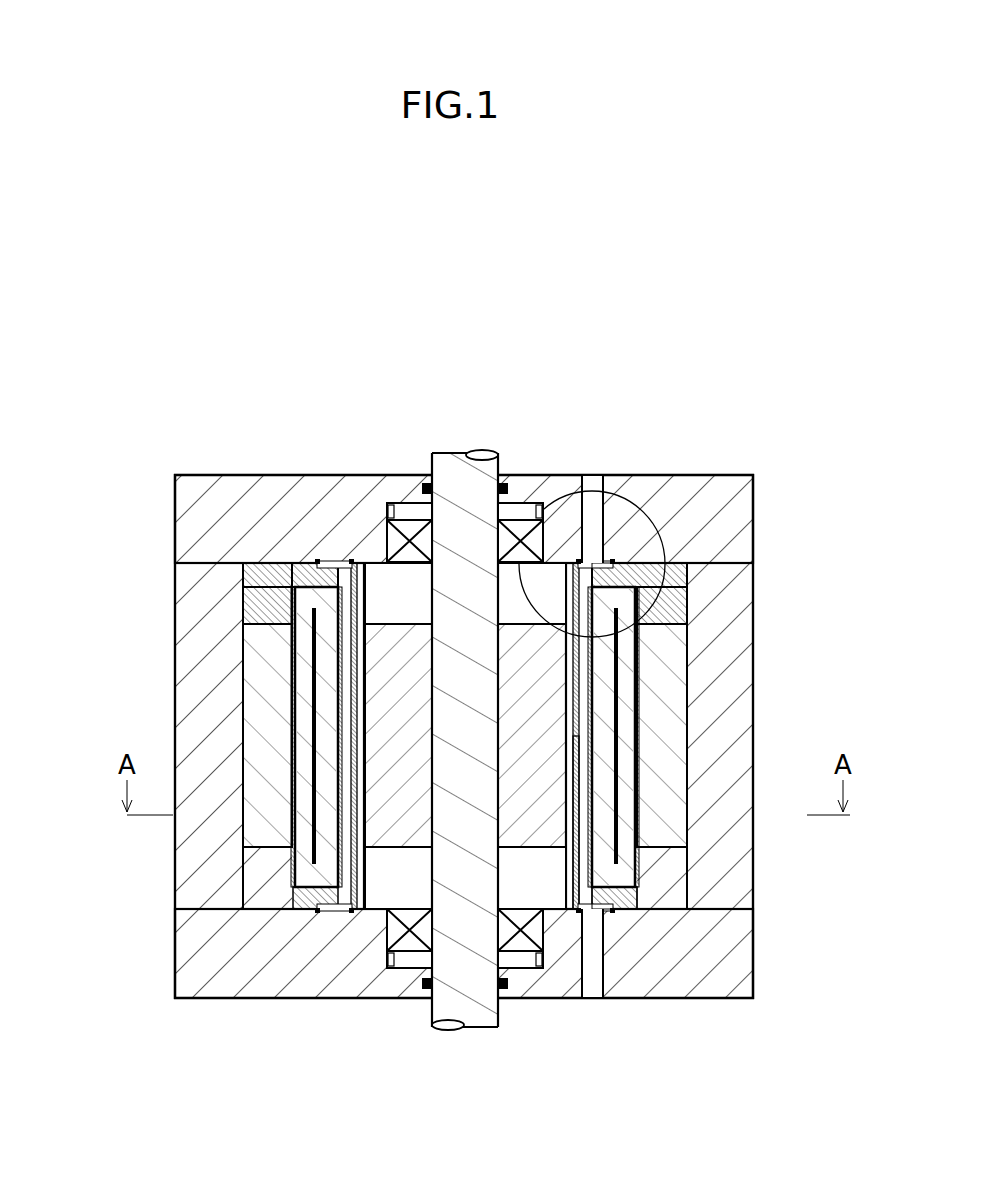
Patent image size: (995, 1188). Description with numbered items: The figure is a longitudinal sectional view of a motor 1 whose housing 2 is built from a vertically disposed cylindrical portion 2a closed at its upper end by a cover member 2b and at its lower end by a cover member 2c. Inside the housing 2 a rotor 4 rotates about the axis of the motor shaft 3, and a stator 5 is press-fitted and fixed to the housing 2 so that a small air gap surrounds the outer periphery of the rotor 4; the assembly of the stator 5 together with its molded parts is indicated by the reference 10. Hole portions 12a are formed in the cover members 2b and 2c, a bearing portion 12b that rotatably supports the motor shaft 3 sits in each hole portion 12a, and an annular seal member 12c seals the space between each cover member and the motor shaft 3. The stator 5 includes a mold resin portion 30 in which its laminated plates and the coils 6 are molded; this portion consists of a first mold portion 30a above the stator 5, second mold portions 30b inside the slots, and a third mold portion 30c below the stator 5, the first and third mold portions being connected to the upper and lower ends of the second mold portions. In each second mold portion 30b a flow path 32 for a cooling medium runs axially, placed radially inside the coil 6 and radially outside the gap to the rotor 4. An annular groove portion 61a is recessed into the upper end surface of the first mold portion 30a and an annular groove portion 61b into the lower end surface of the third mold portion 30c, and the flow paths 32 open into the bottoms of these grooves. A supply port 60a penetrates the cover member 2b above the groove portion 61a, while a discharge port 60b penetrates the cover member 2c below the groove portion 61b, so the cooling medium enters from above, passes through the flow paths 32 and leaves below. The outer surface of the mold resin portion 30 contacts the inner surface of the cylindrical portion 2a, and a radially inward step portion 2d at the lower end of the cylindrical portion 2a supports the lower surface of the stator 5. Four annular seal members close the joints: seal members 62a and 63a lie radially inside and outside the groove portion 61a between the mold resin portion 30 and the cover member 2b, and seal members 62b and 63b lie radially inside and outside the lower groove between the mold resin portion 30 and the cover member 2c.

The motor 1 is at (643, 367).
The housing 2 is at (507, 747).
The cylindrical portion 2a is at (735, 792).
The cover member 2b is at (230, 497).
The cover member 2c is at (232, 998).
The step portion 2d is at (660, 858).
The motor shaft 3 is at (452, 535).
The rotor 4 is at (550, 763).
The stator 5 is at (672, 712).
The coil 6 is at (250, 583).
The stator 10 is at (277, 565).
The hole portion 12a is at (403, 530).
The bearing portion 12b is at (410, 516).
The annular seal member 12c is at (428, 483).
The mold resin portion 30 is at (365, 736).
The first mold portion 30a is at (243, 600).
The second mold portion 30b is at (345, 737).
The third mold portion 30c is at (293, 897).
The flow path 32 is at (345, 668).
The supply port 60a is at (598, 505).
The discharge port 60b is at (600, 987).
The annular groove portion 61a is at (668, 552).
The annular groove portion 61b is at (640, 895).
The annular seal member 62a is at (575, 563).
The annular seal member 62b is at (577, 910).
The annular seal member 63a is at (615, 563).
The annular seal member 63b is at (613, 910).